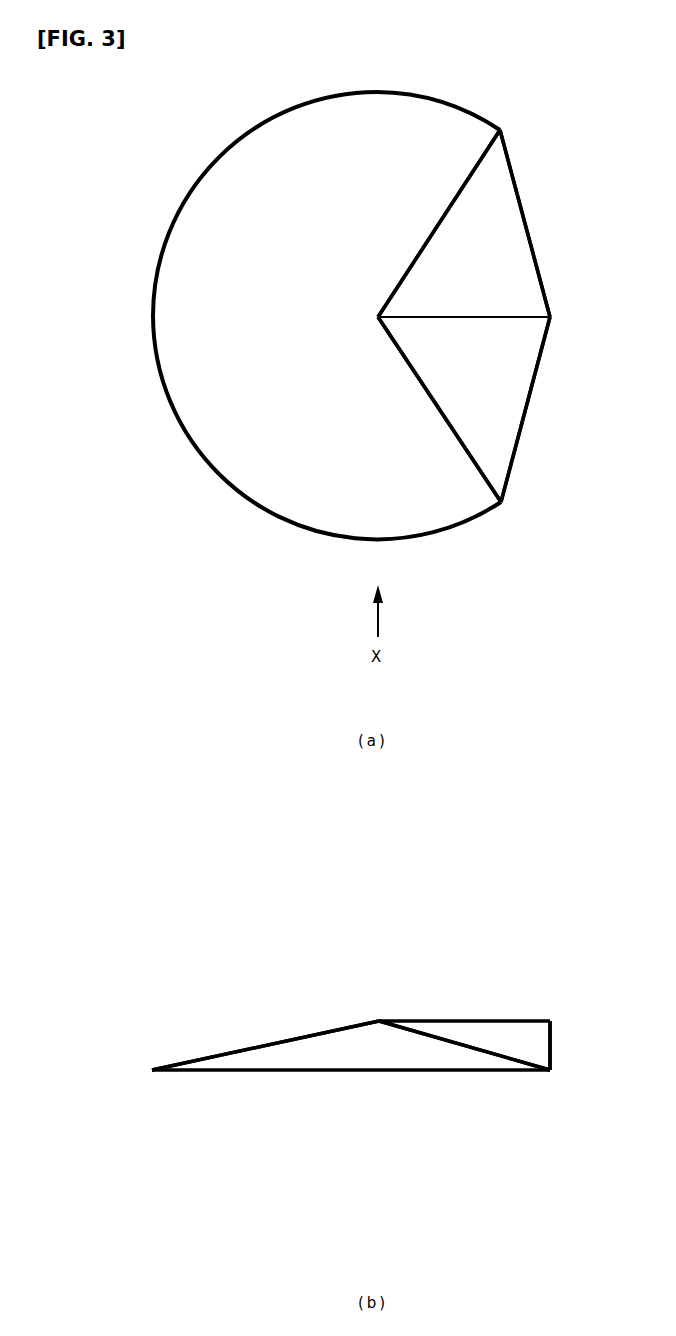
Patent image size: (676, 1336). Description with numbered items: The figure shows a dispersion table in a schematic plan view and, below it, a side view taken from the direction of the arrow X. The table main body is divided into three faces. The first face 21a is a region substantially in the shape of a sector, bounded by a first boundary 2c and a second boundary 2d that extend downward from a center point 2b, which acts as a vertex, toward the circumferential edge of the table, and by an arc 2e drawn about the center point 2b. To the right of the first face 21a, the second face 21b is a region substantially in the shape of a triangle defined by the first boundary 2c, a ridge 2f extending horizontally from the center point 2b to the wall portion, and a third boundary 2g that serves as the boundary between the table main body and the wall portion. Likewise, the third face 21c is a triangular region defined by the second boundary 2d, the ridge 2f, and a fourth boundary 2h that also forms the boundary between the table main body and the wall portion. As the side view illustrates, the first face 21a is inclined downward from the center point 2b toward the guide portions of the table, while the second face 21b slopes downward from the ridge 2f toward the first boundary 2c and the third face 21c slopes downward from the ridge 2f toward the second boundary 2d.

The center point 2b is at (378, 317).
The first boundary 2c is at (455, 197).
The second boundary 2d is at (457, 437).
The arc 2e is at (173, 411).
The ridge 2f is at (520, 317).
The third boundary 2g is at (515, 168).
The fourth boundary 2h is at (515, 462).
The first face 21a is at (290, 227).
The second face 21b is at (488, 218).
The third face 21c is at (488, 412).